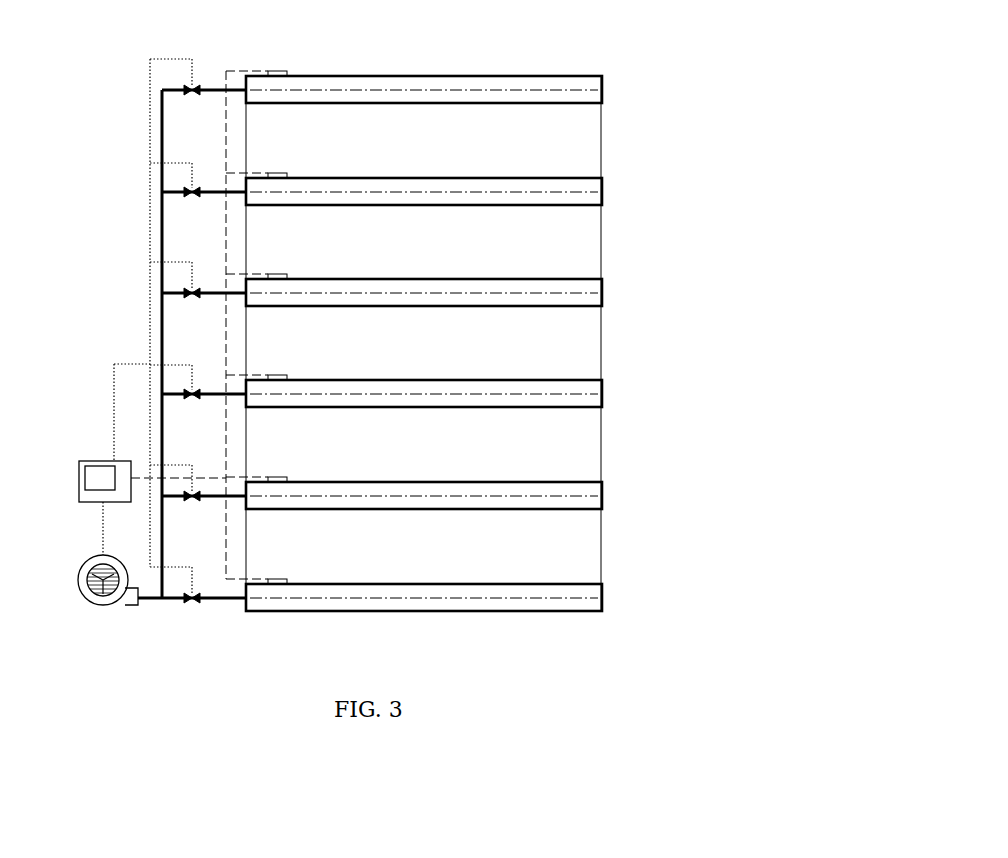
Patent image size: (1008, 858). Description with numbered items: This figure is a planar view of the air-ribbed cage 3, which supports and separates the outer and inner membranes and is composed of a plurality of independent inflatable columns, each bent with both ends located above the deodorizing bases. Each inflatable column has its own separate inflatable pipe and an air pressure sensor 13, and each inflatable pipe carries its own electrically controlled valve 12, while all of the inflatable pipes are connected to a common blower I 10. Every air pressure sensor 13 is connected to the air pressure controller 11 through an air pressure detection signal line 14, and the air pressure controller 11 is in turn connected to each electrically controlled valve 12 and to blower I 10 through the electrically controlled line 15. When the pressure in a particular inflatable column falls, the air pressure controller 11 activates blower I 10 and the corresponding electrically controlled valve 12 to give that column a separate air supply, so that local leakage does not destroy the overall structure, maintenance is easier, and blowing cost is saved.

The air-ribbed cage 3 is at (602, 293).
The blower I 10 is at (93, 555).
The air pressure controller 11 is at (92, 461).
The electrically controlled valve 12 is at (190, 599).
The air pressure sensor 13 is at (276, 579).
The air pressure detection signal line 14 is at (256, 478).
The electrically controlled line 15 is at (114, 364).